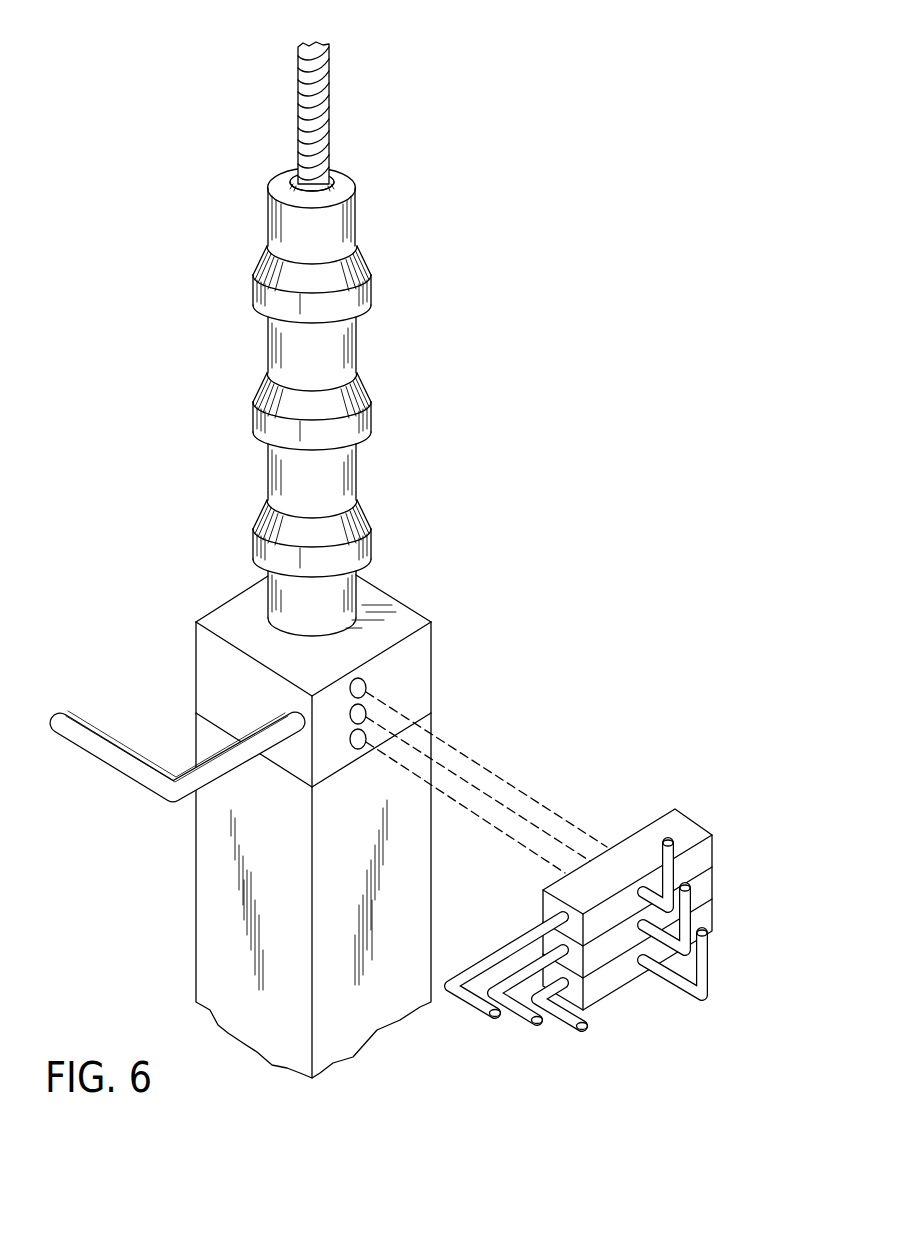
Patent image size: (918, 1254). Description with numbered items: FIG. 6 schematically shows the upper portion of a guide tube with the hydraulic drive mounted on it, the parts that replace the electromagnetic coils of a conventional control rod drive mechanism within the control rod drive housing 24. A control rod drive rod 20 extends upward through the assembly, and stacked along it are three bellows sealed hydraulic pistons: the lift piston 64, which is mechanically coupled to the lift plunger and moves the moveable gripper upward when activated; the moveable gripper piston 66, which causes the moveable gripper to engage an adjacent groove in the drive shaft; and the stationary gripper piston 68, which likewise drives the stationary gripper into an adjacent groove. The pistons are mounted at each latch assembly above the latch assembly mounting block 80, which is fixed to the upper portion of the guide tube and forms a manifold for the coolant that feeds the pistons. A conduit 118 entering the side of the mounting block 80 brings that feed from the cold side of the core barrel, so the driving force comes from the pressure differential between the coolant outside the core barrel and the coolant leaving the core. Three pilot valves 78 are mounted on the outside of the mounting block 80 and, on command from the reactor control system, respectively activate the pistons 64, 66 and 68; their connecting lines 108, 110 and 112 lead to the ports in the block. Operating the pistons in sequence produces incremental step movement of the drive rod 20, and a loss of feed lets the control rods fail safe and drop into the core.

The threaded rod 20 is at (323, 138).
The control rod drive housing 24 is at (205, 937).
The lift piston 64 is at (363, 297).
The moveable gripper piston 66 is at (363, 413).
The stationary gripper piston 68 is at (367, 545).
The pilot valves 78 is at (708, 853).
The latch assembly mounting block 80 is at (207, 648).
The first pin 108 is at (663, 858).
The second pin 110 is at (665, 942).
The third pin 112 is at (693, 993).
The conduit 118 is at (95, 740).